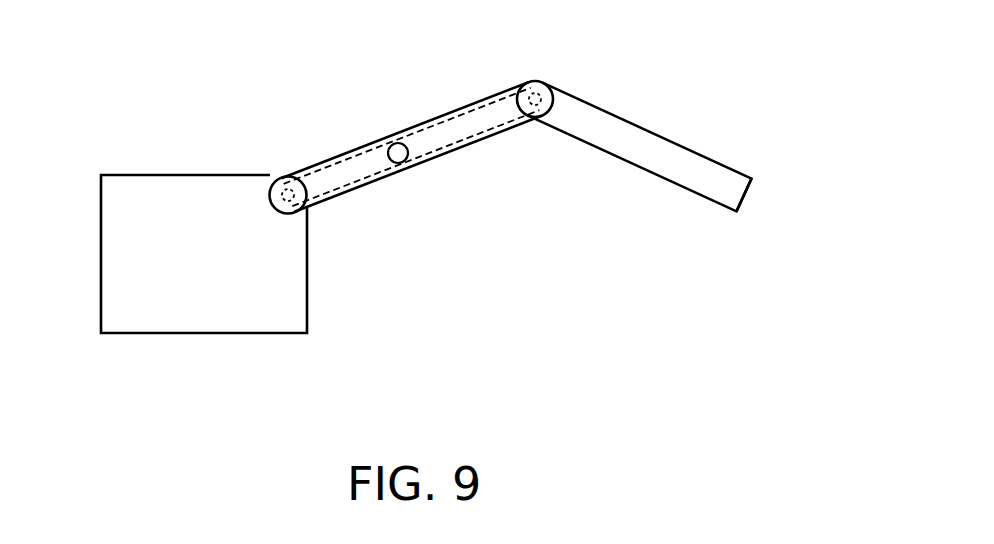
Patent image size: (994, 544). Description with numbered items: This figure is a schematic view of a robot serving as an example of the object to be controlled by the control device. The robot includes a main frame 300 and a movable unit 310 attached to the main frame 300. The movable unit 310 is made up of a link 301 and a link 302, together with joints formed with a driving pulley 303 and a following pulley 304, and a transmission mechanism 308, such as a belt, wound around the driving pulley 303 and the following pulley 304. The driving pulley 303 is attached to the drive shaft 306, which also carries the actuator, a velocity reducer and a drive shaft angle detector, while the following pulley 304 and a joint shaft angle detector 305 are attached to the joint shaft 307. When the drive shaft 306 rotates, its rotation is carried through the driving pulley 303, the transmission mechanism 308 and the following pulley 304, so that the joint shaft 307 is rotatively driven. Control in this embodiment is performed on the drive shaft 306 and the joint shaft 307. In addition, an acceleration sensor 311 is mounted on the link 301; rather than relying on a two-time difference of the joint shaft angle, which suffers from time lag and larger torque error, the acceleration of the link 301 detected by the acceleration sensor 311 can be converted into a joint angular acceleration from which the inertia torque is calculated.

The main frame 300 is at (179, 175).
The link 301 is at (450, 112).
The link 302 is at (655, 132).
The driving pulley 303 is at (277, 205).
The following pulley 304 is at (533, 111).
The joint shaft angle detector 305 is at (748, 197).
The drive shaft 306 is at (292, 201).
The joint shaft 307 is at (540, 104).
The transmission mechanism 308 is at (428, 157).
The movable unit 310 is at (500, 232).
The acceleration sensor 311 is at (392, 143).